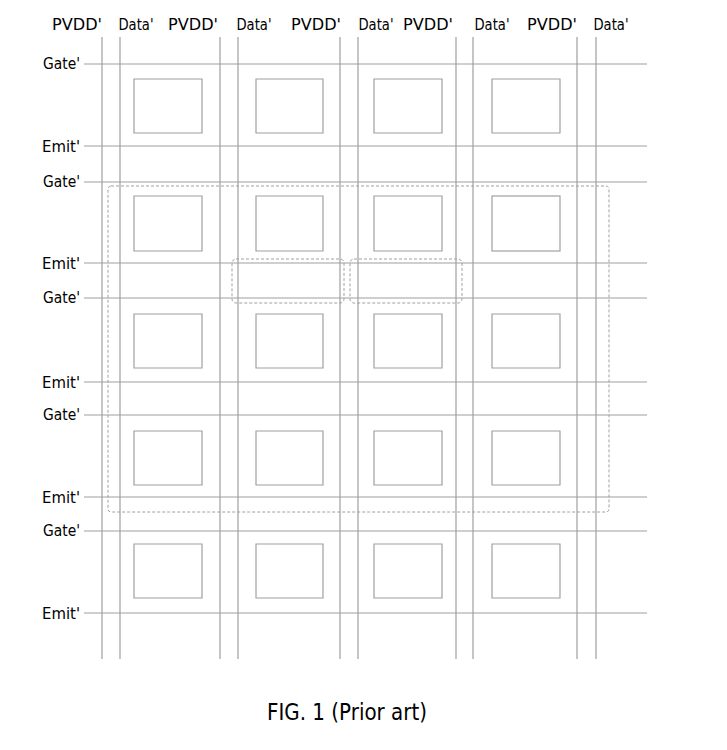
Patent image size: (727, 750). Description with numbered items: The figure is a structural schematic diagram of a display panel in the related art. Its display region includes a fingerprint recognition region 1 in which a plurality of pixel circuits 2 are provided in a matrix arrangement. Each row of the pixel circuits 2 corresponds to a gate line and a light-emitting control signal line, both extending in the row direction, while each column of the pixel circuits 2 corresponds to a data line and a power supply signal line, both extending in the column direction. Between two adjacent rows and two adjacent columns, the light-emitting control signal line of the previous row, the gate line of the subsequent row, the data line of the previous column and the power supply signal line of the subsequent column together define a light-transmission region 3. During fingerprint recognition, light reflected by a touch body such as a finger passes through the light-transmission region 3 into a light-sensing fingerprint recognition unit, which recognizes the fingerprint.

The fingerprint recognition region 1 is at (609, 243).
The pixel circuit 2 is at (560, 224).
The light-transmission region 3 is at (232, 276).